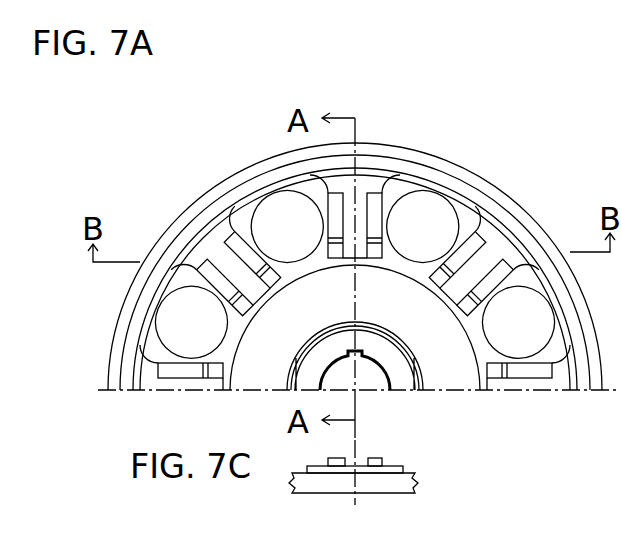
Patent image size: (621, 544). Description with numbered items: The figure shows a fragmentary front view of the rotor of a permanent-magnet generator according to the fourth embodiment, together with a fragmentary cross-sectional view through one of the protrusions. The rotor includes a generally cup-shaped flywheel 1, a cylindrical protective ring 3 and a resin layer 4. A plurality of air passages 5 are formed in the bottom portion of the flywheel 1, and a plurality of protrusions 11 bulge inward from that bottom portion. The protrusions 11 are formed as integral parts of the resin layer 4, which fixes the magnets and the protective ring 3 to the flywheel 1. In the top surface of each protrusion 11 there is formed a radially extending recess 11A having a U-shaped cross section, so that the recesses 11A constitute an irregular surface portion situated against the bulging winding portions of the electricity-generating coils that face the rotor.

In FIG. 7A, the flywheel 1 is at (172, 240).
In FIG. 7A, the protective ring 3 is at (245, 193).
In FIG. 7A, the resin layer 4 is at (205, 222).
In FIG. 7A, the air passages 5 is at (428, 223).
In FIG. 7A, the protrusions 11 is at (372, 192).
In FIG. 7C, the protrusions 11 is at (430, 450).
In FIG. 7A, the recess 11A is at (332, 213).
In FIG. 7C, the recess 11A is at (382, 458).